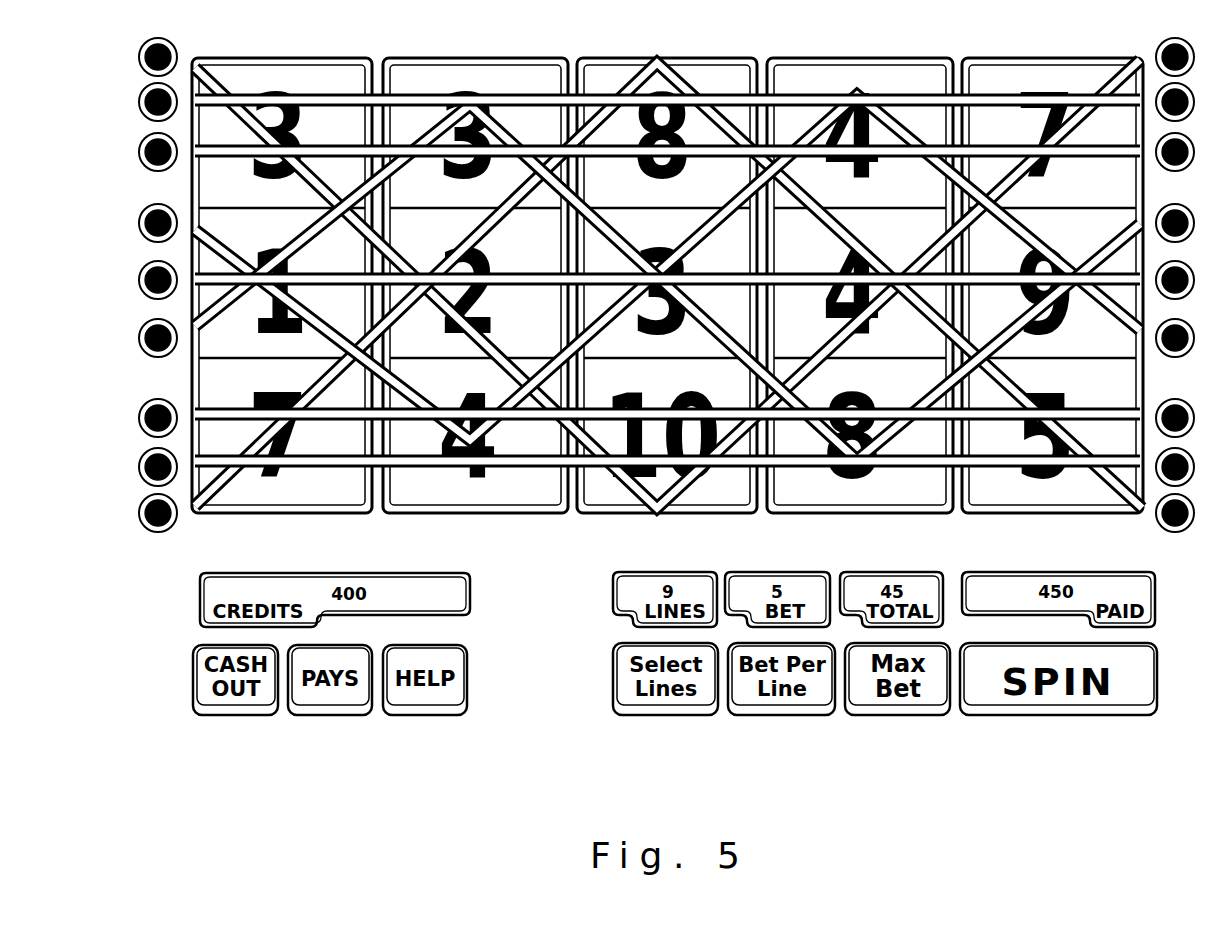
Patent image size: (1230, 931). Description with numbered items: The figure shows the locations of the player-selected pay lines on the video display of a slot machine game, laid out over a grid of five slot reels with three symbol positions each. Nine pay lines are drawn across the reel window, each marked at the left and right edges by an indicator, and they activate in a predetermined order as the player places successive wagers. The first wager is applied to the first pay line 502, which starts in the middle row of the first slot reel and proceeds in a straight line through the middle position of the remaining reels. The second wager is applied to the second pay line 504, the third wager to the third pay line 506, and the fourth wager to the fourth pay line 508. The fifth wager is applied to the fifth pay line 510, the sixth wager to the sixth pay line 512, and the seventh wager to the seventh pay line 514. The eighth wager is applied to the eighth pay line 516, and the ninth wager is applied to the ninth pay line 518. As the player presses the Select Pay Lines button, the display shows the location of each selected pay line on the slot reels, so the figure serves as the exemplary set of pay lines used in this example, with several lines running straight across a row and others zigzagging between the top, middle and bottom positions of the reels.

The pay line 1 502 is at (208, 278).
The pay line 2 504 is at (208, 100).
The pay line 3 506 is at (208, 462).
The pay line 4 508 is at (192, 493).
The pay line 5 510 is at (192, 69).
The pay line 6 512 is at (208, 150).
The pay line 7 514 is at (208, 413).
The pay line 8 516 is at (208, 323).
The pay line 9 518 is at (208, 233).